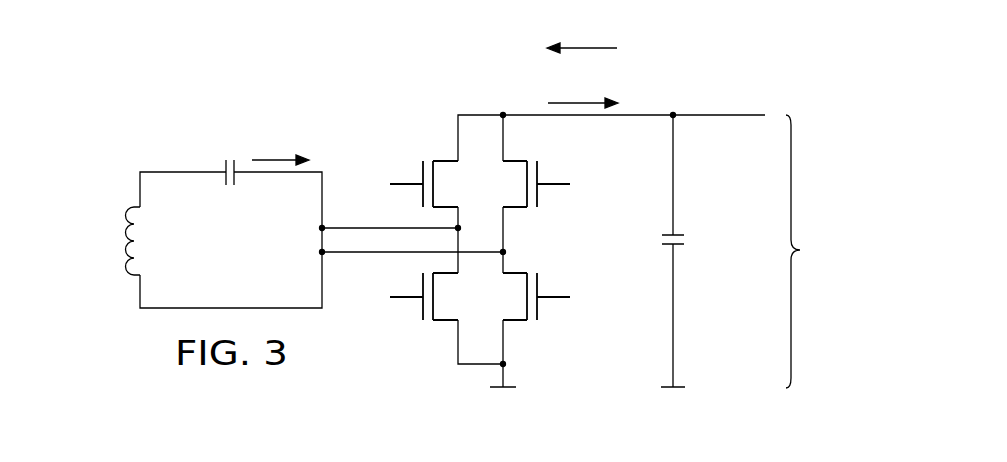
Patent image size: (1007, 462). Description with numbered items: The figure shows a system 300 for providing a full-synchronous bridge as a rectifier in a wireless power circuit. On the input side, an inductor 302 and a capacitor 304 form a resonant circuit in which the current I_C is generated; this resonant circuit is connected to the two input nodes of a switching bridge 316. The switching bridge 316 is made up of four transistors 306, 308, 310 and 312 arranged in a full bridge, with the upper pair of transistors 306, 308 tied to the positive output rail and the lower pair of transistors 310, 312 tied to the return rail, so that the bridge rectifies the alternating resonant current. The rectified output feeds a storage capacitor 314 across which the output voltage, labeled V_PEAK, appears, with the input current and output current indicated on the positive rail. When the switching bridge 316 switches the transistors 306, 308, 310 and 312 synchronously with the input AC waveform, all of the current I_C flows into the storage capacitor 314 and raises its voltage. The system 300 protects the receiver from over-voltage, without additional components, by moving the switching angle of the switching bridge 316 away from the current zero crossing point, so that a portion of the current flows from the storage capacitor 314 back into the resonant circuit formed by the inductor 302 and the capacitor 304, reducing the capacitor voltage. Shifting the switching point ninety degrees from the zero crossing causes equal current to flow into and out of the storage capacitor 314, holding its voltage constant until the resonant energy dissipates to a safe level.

The system 300 is at (799, 80).
The inductor 302 is at (125, 228).
The capacitor 304 is at (232, 162).
The transistor 306 is at (422, 170).
The transistor 308 is at (538, 170).
The transistor 310 is at (422, 306).
The transistor 312 is at (538, 306).
The storage capacitor 314 is at (686, 245).
The switching bridge 316 is at (548, 392).